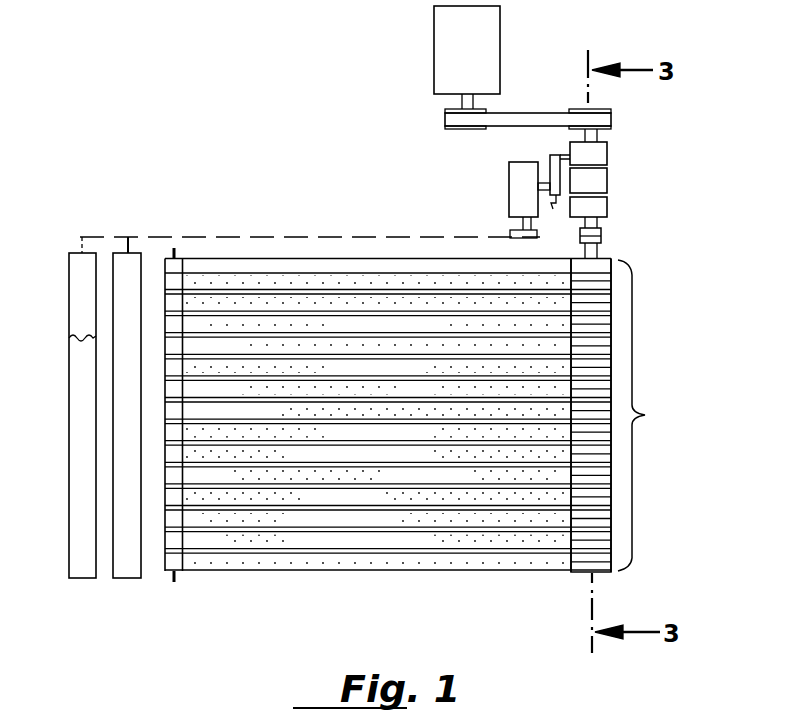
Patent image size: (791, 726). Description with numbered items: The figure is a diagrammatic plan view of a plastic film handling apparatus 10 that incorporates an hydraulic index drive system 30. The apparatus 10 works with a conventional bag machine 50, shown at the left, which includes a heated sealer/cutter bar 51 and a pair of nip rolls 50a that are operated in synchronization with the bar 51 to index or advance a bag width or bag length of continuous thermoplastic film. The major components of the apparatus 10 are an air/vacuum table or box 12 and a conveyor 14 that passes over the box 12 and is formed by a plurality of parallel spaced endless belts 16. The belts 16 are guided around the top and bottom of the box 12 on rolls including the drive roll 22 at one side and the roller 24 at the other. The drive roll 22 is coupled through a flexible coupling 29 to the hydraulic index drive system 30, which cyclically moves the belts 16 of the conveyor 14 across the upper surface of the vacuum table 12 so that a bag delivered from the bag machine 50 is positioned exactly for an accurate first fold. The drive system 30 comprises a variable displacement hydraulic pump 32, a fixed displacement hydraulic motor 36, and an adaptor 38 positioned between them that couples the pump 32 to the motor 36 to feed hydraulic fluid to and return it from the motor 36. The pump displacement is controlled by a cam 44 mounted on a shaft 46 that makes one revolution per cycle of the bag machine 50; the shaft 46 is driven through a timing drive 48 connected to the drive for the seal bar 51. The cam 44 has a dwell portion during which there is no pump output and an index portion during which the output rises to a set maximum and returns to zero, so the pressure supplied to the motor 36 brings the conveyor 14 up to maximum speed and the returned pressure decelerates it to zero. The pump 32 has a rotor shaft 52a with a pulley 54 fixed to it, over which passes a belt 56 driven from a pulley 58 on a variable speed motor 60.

The plastic film handling apparatus 10 is at (320, 205).
The air/vacuum table 12 is at (342, 571).
The conveyor 14 is at (648, 415).
The endless belts 16 is at (505, 498).
The drive roll 22 is at (602, 572).
The roller 24 is at (177, 565).
The flexible coupling 29 is at (602, 232).
The hydraulic index drive system 30 is at (716, 177).
The variable displacement hydraulic pump 32 is at (592, 153).
The fixed displacement hydraulic motor 36 is at (600, 208).
The adaptor 38 is at (597, 182).
The cam 44 is at (558, 198).
The shaft 46 is at (546, 183).
The timing drive 48 is at (520, 177).
The bag machine 50 is at (110, 365).
The nip rolls 50a is at (75, 370).
The heated sealer/cutter bar 51 is at (122, 267).
The rotor shaft 52a is at (597, 133).
The pulley 54 is at (610, 108).
The belt 56 is at (520, 117).
The pulley 58 is at (453, 129).
The variable speed motor 60 is at (450, 48).